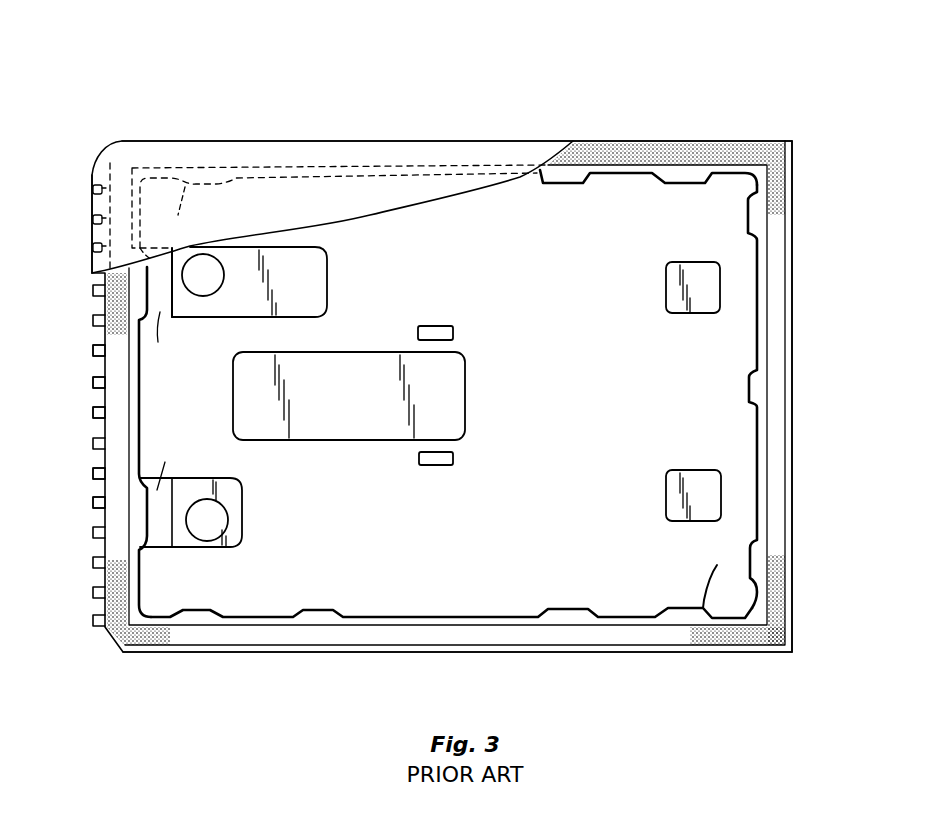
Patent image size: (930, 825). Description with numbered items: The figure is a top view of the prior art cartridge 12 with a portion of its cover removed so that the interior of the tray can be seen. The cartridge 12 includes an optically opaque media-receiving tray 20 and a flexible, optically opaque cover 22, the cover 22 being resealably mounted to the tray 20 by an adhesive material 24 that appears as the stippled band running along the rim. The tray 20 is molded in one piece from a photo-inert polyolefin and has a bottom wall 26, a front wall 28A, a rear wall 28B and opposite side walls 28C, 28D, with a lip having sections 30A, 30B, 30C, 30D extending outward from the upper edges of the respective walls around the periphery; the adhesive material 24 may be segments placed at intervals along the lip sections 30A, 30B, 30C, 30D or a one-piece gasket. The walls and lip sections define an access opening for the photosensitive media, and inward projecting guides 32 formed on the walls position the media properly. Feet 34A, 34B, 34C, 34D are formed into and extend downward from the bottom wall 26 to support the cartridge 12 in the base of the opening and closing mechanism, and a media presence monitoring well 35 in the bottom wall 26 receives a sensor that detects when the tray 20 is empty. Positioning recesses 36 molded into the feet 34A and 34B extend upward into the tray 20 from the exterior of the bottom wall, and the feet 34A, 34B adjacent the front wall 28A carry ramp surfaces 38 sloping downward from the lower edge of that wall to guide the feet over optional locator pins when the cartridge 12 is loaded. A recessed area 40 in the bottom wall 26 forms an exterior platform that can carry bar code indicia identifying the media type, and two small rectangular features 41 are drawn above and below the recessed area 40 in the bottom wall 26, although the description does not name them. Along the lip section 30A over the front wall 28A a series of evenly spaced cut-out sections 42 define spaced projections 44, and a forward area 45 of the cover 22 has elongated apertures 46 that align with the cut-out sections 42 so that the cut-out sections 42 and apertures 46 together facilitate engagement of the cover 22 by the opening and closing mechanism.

The cartridge 12 is at (519, 88).
The media-receiving tray 20 is at (401, 139).
The cover 22 is at (428, 197).
The adhesive material 24 is at (612, 152).
The bottom wall 26 is at (520, 516).
The front wall 28A is at (140, 396).
The rear wall 28B is at (755, 342).
The side wall 28C is at (435, 617).
The side wall 28D is at (622, 178).
The lip section 30A is at (118, 434).
The lip section 30B is at (778, 332).
The lip section 30C is at (554, 640).
The lip section 30D is at (708, 158).
The inward projecting guides 32 is at (745, 568).
The foot 34A is at (324, 264).
The foot 34B is at (232, 498).
The foot 34C is at (675, 503).
The foot 34D is at (675, 300).
The media presence monitoring well 35 is at (320, 300).
The positioning recesses 36 is at (209, 285).
The ramp surfaces 38 is at (160, 401).
The recessed area 40 is at (328, 409).
The standoffs 41 is at (425, 330).
The cut-out sections 42 is at (93, 412).
The projections 44 is at (93, 502).
The forward area 45 is at (97, 172).
The elongated apertures 46 is at (93, 218).